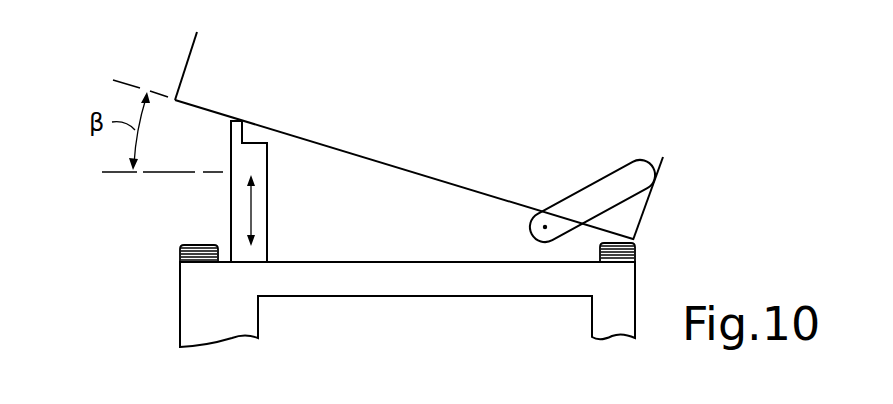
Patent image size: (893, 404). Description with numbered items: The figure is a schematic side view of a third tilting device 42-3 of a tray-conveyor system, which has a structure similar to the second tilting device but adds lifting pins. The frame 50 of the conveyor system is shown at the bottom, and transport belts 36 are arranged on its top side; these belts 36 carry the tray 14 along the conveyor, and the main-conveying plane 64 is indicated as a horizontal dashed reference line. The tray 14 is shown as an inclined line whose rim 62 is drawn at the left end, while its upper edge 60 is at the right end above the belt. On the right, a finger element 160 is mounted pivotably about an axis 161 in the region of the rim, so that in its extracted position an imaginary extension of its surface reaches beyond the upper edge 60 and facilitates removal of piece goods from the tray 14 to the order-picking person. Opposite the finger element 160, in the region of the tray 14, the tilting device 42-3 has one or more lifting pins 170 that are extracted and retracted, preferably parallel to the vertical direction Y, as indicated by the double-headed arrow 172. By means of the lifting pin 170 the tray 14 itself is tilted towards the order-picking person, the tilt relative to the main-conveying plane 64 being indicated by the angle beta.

The tray 14 is at (325, 145).
The belt 36 is at (176, 255).
The tilting device 42-3 is at (482, 173).
The frame 50 is at (433, 297).
The upper edge 60 is at (667, 152).
The rim 62 is at (181, 72).
The main-conveying plane 64 is at (120, 174).
The finger element 160 is at (603, 173).
The axis 161 is at (545, 228).
The lifting pin 170 is at (268, 213).
The direction of adjustment arrow 172 is at (250, 210).